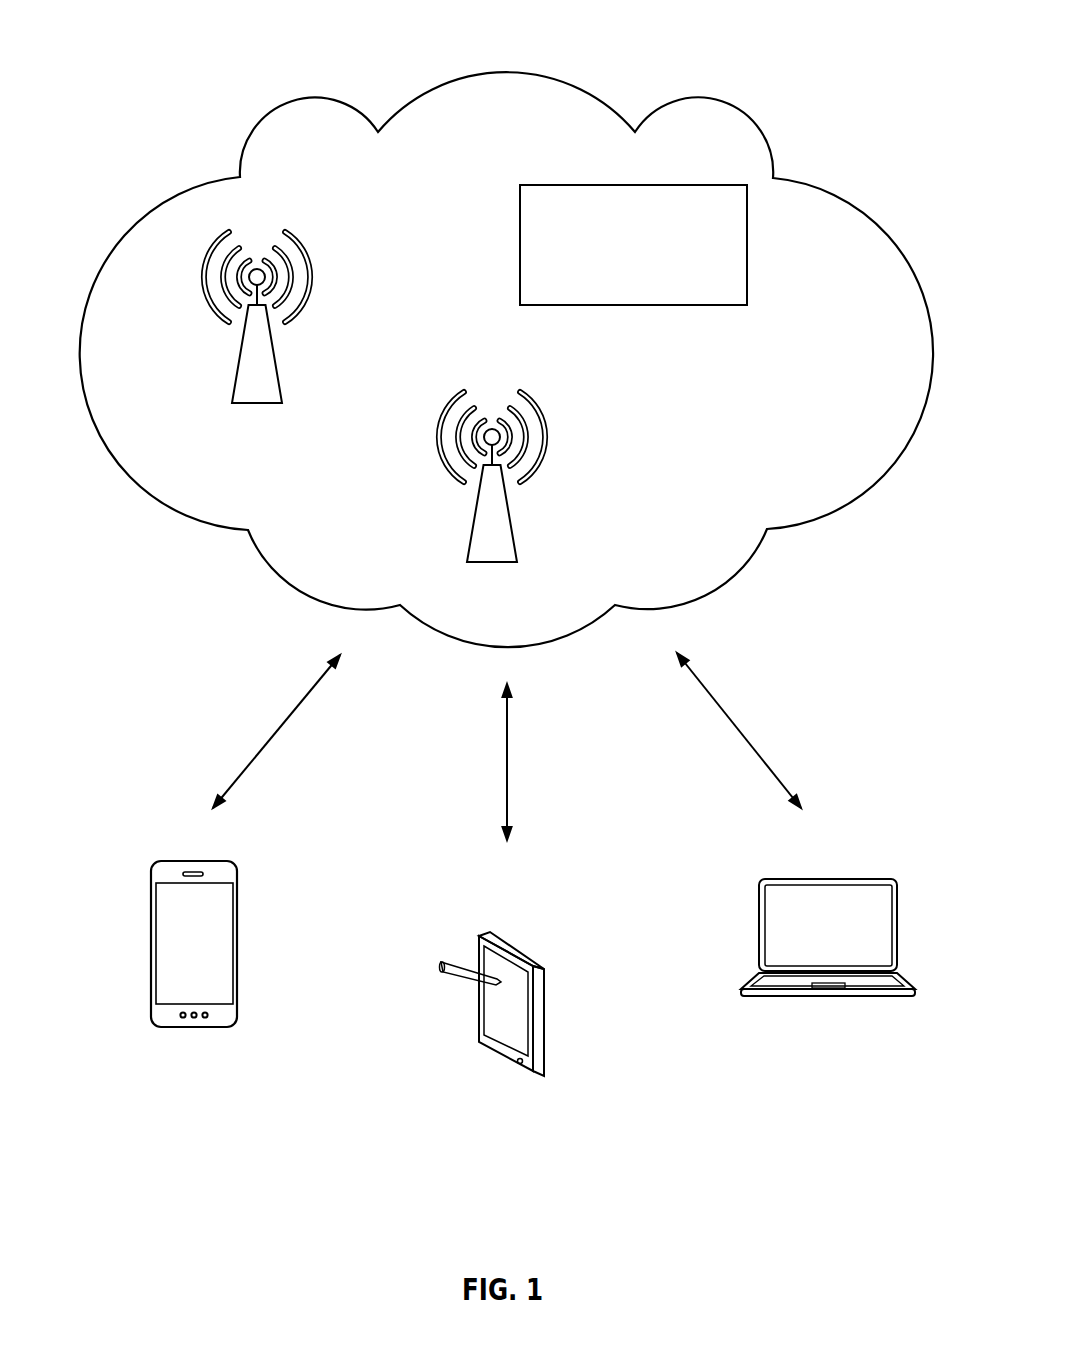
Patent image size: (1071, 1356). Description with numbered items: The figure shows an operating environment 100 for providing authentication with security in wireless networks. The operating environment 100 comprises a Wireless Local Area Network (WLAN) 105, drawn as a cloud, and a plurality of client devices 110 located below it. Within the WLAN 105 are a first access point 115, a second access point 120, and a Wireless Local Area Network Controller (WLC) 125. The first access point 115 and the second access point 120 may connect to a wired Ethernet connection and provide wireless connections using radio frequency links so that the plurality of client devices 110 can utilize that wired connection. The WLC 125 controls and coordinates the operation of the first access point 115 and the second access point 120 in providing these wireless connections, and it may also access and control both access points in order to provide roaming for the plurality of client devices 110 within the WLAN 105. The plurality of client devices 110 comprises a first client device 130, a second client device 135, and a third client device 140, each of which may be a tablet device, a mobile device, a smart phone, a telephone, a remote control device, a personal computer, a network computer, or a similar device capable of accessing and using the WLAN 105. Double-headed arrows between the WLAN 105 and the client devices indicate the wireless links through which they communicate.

The operating environment 100 is at (160, 38).
The Wireless Local Area Network (WLAN) 105 is at (315, 102).
The plurality of client devices 110 is at (476, 1027).
The first access point 115 is at (510, 508).
The second access point 120 is at (237, 372).
The Wireless Local Area Network Controller (WLC) 125 is at (553, 185).
The first client device 130 is at (163, 1015).
The second client device 135 is at (492, 1058).
The third client device 140 is at (762, 997).